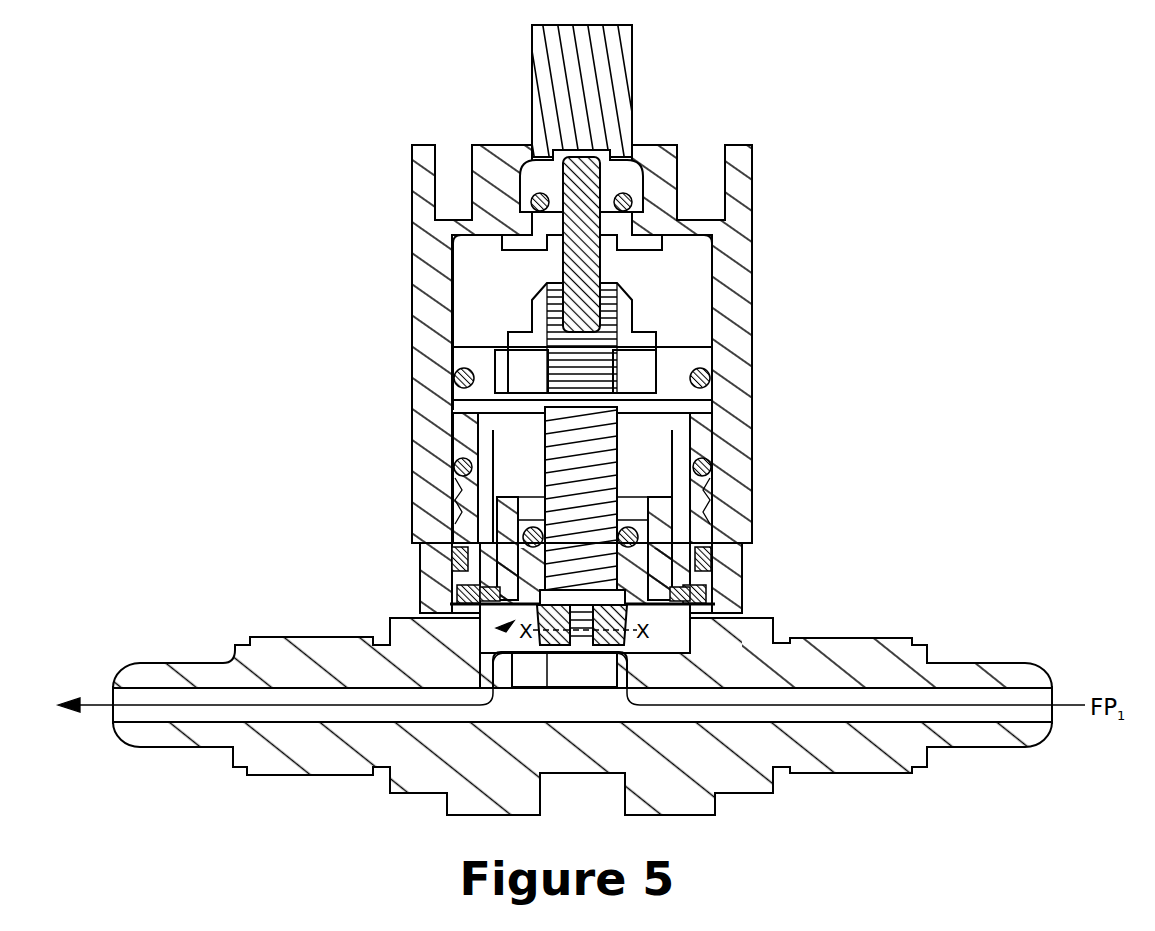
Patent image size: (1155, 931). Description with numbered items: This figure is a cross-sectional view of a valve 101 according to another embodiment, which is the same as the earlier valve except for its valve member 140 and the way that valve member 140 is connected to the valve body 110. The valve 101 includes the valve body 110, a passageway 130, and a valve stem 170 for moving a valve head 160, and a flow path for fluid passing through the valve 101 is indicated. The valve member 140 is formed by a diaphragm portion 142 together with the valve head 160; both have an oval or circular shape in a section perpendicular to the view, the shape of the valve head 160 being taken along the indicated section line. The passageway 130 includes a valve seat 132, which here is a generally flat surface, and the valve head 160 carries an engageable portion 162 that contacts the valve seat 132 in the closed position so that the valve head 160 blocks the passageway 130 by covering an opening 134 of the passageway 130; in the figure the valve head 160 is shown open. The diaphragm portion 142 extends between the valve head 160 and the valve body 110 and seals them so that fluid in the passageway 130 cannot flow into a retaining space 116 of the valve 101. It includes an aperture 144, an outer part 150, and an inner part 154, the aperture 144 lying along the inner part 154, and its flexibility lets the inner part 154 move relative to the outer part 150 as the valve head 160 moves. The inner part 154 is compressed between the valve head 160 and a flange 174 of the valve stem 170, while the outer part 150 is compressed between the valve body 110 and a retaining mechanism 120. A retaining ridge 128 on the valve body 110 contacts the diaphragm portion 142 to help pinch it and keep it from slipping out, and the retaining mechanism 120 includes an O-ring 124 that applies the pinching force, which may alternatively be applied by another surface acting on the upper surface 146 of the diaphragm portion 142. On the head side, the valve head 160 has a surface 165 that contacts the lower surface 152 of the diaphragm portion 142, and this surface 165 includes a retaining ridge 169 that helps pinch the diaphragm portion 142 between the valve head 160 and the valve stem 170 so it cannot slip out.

The valve 101 is at (992, 138).
The valve body 110 is at (752, 147).
The retaining space 116 is at (485, 265).
The retaining mechanism 120 is at (713, 433).
The O-ring 124 is at (735, 565).
The retaining ridge 128 is at (660, 622).
The passageway 130 is at (322, 716).
The valve seat 132 is at (630, 700).
The opening 134 is at (665, 697).
The valve member 140 is at (428, 615).
The diaphragm portion 142 is at (753, 518).
The aperture 144 is at (412, 440).
The upper surface 146 is at (720, 535).
The outer part 150 is at (660, 590).
The lower surface 152 is at (680, 640).
The inner part 154 is at (755, 487).
The valve head 160 is at (436, 601).
The engageable portion 162 is at (690, 652).
The surface 165 is at (420, 517).
The retaining ridge 169 is at (423, 578).
The valve stem 170 is at (615, 285).
The flange 174 is at (420, 548).